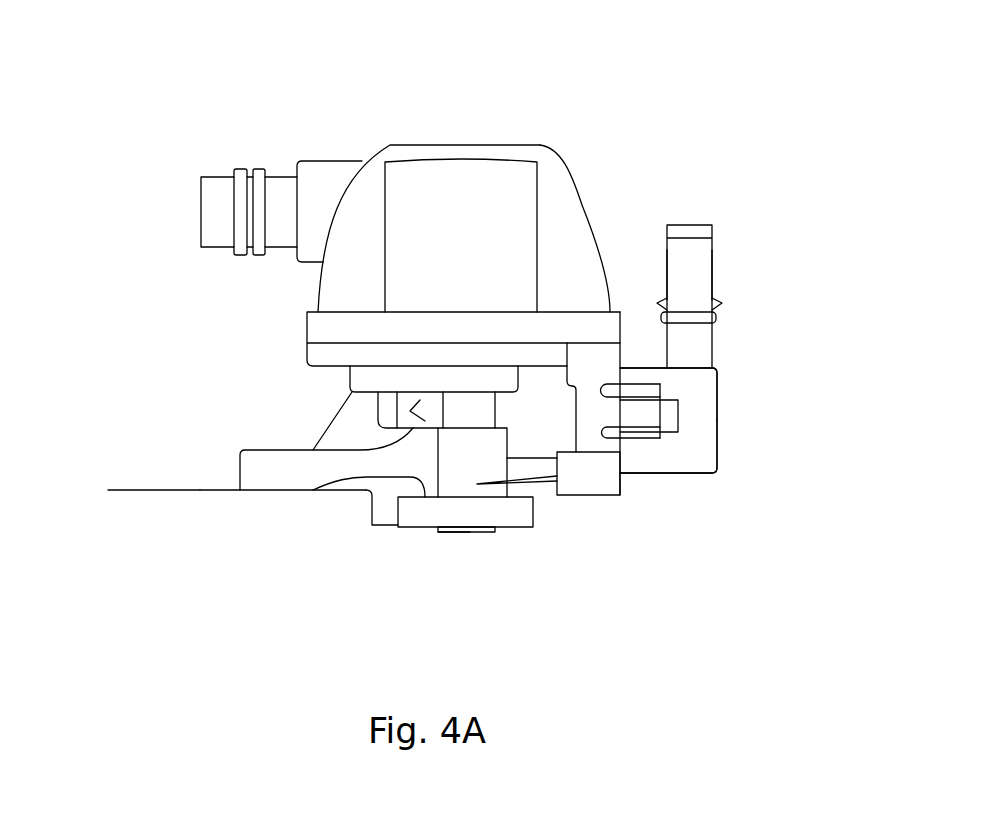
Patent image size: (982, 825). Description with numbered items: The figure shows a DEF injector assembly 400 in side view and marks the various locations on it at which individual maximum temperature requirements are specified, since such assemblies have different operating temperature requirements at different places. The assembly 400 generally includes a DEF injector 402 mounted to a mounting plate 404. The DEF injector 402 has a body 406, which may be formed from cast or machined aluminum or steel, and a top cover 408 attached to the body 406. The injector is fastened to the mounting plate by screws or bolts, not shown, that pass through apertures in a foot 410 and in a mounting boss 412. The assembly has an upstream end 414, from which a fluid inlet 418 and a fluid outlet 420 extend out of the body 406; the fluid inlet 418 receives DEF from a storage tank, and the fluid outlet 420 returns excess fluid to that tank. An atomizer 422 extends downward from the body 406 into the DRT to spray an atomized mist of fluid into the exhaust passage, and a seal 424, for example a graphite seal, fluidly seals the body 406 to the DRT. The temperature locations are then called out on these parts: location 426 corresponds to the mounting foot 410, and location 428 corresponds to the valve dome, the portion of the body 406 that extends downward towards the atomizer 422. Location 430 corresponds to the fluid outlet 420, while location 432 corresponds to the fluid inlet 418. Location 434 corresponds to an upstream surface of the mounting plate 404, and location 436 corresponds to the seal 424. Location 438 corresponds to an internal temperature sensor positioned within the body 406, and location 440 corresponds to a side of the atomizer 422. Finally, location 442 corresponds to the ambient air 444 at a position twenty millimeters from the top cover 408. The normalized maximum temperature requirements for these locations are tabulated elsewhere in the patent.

The DEF injector assembly 400 is at (486, 68).
The DEF injector 402 is at (367, 377).
The mounting plate 404 is at (125, 490).
The body 406 is at (655, 455).
The top cover 408 is at (558, 153).
The foot 410 is at (268, 480).
The mounting boss 412 is at (598, 483).
The upstream end 414 is at (717, 467).
The fluid inlet 418 is at (705, 226).
The fluid outlet 420 is at (688, 265).
The atomizer 422 is at (487, 532).
The seal 424 is at (502, 520).
The location 426 is at (297, 468).
The location 428 is at (452, 490).
The location 430 is at (717, 393).
The location 432 is at (717, 438).
The location 434 is at (207, 490).
The location 436 is at (387, 527).
The location 438 is at (595, 220).
The location 440 is at (457, 532).
The location 442 is at (255, 57).
The ambient air 444 is at (407, 47).